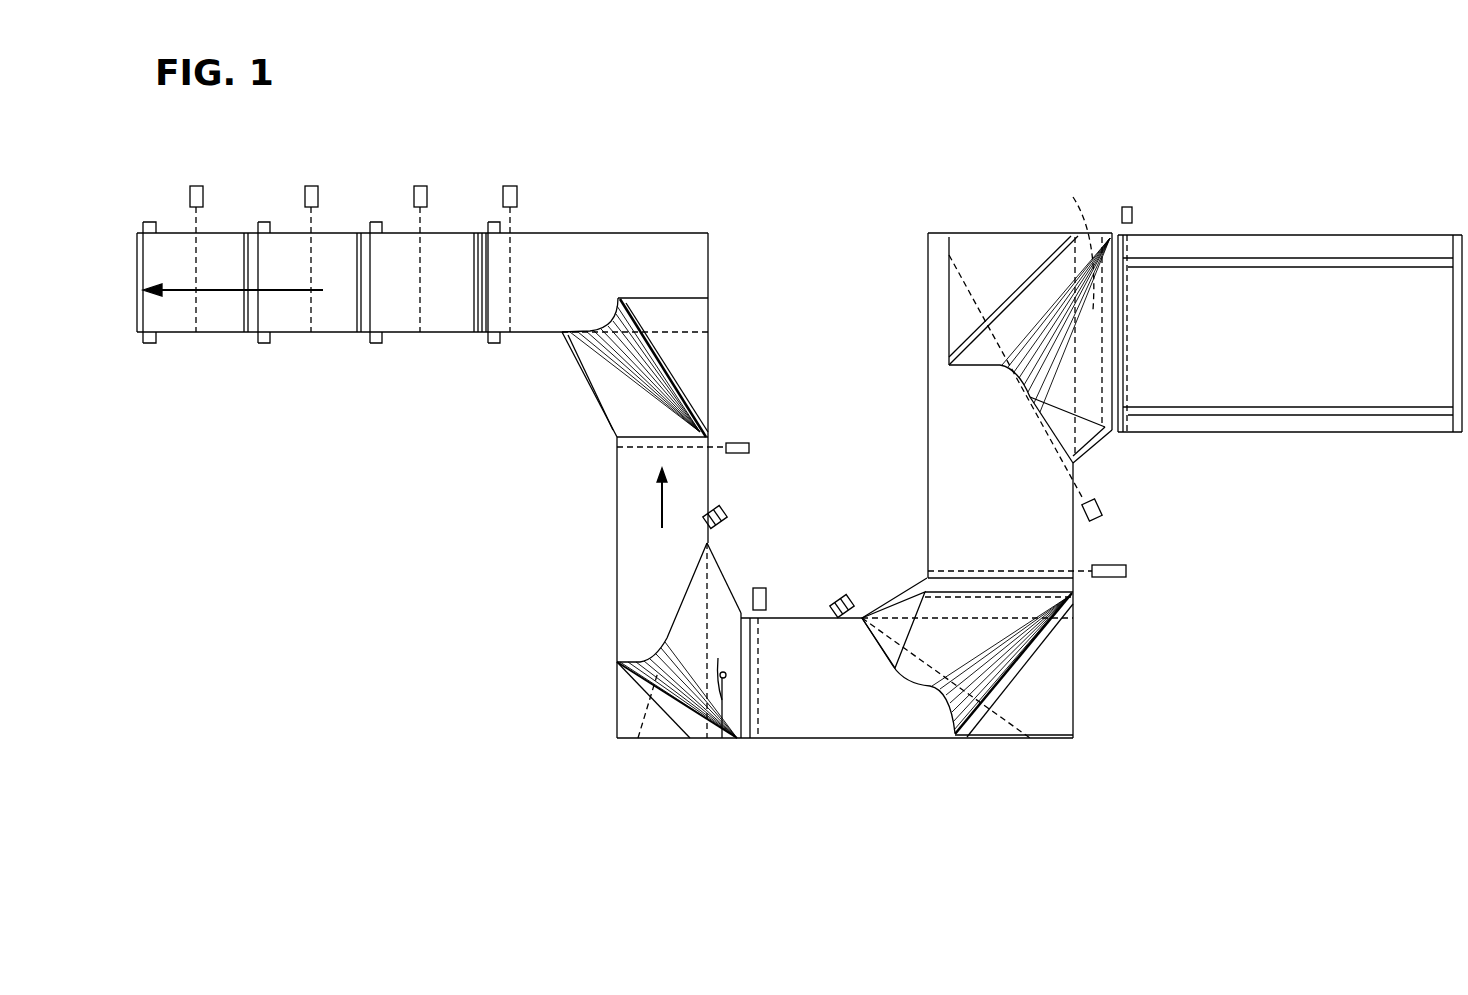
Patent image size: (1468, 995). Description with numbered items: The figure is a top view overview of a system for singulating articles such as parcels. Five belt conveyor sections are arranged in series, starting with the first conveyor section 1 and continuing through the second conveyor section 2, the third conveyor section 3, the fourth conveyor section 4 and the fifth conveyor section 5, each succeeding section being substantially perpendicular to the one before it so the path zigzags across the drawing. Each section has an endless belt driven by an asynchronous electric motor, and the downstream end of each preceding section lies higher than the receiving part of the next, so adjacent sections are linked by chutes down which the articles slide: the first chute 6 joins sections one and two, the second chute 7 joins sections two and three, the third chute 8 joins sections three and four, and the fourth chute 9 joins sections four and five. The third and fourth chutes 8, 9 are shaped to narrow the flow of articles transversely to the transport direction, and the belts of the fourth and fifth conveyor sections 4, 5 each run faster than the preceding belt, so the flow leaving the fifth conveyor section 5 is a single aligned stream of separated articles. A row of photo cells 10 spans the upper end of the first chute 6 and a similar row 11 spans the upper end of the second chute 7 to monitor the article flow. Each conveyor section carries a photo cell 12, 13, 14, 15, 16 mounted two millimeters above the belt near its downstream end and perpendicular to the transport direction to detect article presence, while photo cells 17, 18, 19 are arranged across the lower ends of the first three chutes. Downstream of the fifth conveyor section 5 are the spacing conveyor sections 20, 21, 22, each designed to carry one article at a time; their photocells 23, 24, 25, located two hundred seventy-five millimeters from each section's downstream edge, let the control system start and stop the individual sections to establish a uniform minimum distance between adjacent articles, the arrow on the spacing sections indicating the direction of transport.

The first conveyor section 1 is at (1317, 385).
The second conveyor section 2 is at (942, 455).
The third conveyor section 3 is at (878, 705).
The fourth conveyor section 4 is at (647, 566).
The fifth conveyor section 5 is at (605, 255).
The first chute 6 is at (1088, 405).
The second chute 7 is at (1054, 673).
The third chute 8 is at (727, 740).
The fourth chute 9 is at (708, 318).
The row of photo cells 10 is at (1069, 245).
The row of photo cells 11 is at (942, 600).
The photo cell 12 is at (1133, 207).
The photo cell 13 is at (1128, 570).
The photo cell 14 is at (766, 597).
The photo cell 15 is at (745, 441).
The photo cell 16 is at (519, 190).
The photo cell 17 is at (1104, 518).
The photo cell 18 is at (836, 597).
The photo cell 19 is at (725, 508).
The spacing conveyor section 20 is at (443, 318).
The spacing conveyor section 21 is at (328, 318).
The spacing conveyor section 22 is at (212, 318).
The photocell 23 is at (429, 190).
The photocell 24 is at (320, 190).
The photocell 25 is at (204, 190).